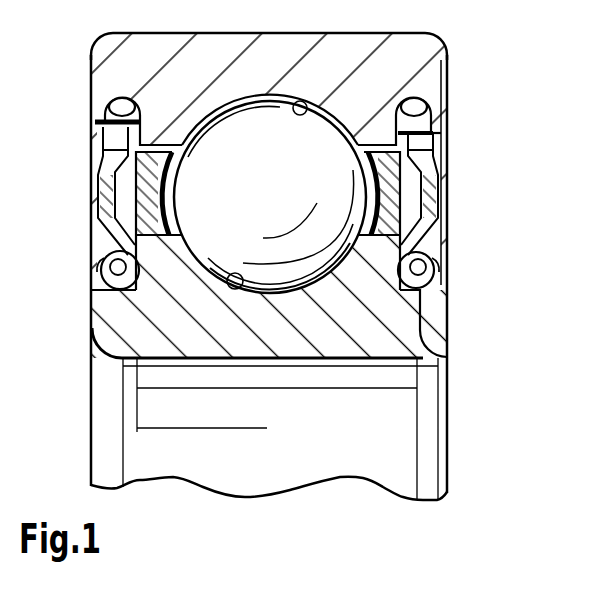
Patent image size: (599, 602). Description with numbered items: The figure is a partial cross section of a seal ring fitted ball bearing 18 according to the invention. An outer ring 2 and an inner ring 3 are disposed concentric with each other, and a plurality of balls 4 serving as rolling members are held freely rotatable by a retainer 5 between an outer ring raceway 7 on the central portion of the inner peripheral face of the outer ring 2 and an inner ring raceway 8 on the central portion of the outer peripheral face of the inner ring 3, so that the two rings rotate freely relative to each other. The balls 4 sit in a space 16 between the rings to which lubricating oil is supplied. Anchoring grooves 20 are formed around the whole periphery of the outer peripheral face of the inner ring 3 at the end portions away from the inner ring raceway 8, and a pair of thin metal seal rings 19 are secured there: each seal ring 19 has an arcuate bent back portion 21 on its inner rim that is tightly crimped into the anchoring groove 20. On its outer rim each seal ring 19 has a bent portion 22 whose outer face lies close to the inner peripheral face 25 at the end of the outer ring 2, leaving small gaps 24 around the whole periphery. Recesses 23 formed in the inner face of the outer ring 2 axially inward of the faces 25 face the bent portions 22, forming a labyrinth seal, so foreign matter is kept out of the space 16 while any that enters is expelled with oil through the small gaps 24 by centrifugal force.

The outer ring 2 is at (420, 48).
The inner ring 3 is at (440, 313).
The balls 4 is at (240, 113).
The retainer 5 is at (145, 176).
The outer ring raceway 7 is at (302, 101).
The inner ring raceway 8 is at (234, 289).
The space 16 is at (118, 198).
The seal ring fitted ball bearing 18 is at (458, 121).
The seal rings 19 is at (103, 256).
The anchoring grooves 20 is at (118, 290).
The bent back portion 21 is at (104, 272).
The bent portion 22 is at (108, 128).
The recesses 23 is at (113, 97).
The small gaps 24 is at (128, 100).
The inner peripheral faces 25 is at (98, 118).